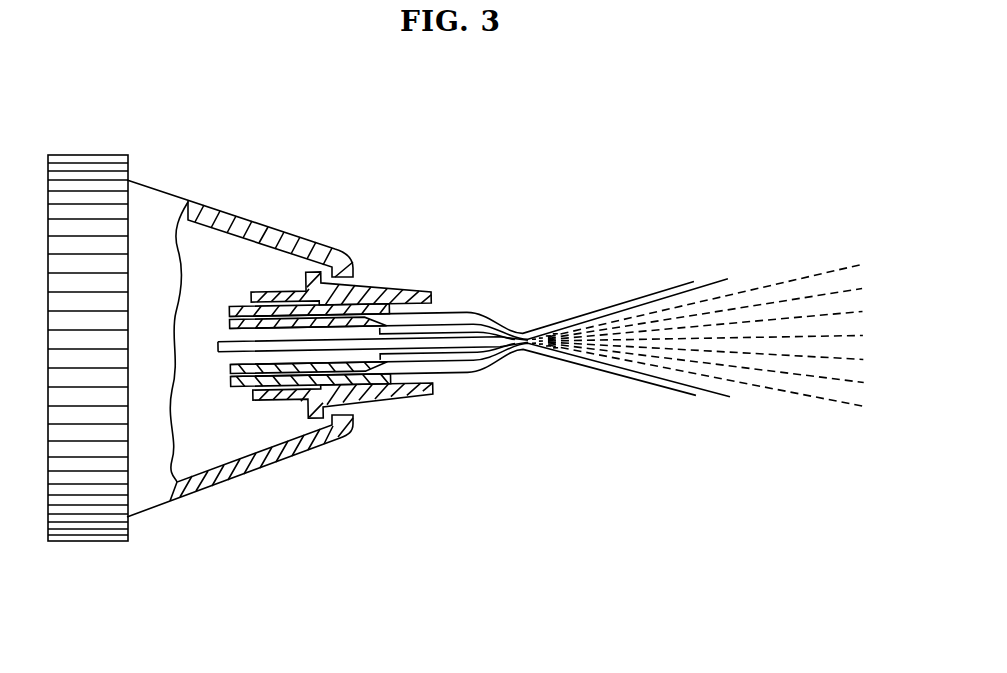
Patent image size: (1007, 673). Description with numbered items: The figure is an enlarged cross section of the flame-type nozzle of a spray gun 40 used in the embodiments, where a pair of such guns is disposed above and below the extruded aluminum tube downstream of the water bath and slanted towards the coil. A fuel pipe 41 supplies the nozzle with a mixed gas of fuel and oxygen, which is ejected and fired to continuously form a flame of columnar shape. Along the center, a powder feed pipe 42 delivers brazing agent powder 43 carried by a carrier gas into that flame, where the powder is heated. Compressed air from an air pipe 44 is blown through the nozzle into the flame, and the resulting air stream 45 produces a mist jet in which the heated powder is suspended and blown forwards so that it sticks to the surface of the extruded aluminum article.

The spray gun 40 is at (362, 222).
The fuel pipe 41 is at (230, 313).
The powder feed pipe 42 is at (217, 351).
The brazing agent powder 43 is at (450, 349).
The air pipe 44 is at (250, 306).
The air stream 45 is at (503, 321).